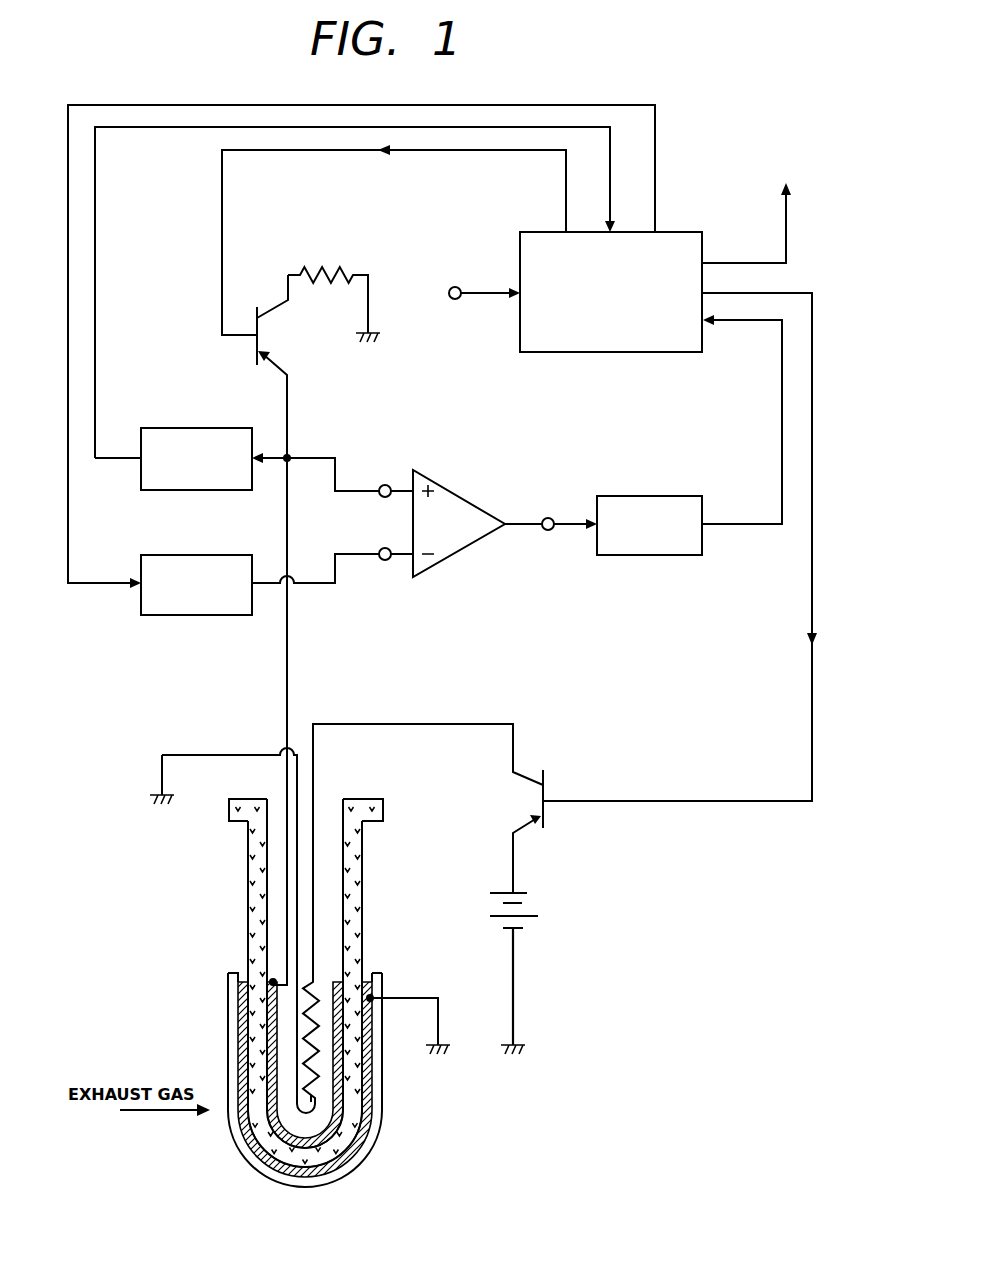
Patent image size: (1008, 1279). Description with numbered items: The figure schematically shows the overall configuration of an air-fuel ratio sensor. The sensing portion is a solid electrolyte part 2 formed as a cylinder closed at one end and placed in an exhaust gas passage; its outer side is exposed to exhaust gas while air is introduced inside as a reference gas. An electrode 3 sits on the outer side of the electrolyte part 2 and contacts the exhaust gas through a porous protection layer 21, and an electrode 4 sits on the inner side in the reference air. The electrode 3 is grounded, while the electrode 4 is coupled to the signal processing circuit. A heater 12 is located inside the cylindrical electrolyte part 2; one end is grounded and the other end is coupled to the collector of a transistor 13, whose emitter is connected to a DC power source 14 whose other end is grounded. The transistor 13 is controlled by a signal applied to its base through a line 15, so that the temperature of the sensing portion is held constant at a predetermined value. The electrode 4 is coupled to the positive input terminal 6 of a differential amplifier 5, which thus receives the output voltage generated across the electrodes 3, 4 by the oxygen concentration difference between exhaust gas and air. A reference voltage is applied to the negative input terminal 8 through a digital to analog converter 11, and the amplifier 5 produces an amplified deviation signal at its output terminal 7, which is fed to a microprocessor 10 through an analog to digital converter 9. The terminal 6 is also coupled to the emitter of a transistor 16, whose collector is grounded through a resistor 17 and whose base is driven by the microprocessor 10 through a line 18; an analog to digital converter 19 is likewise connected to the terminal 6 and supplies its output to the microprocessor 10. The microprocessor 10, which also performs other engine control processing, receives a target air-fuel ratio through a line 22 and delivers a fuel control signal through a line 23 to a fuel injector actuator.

The solid electrolyte part 2 is at (248, 930).
The electrode 3 is at (372, 1076).
The electrode 4 is at (268, 1042).
The differential amplifier 5 is at (460, 490).
The positive input terminal 6 is at (385, 485).
The output terminal 7 is at (548, 530).
The negative input terminal 8 is at (385, 560).
The analog to digital converter 9 is at (690, 496).
The microprocessor 10 is at (683, 232).
The digital to analog converter 11 is at (236, 555).
The heater 12 is at (313, 980).
The transistor 13 is at (545, 776).
The DC power source 14 is at (533, 893).
The line 15 is at (812, 690).
The transistor 16 is at (273, 329).
The resistor 17 is at (330, 266).
The line 18 is at (222, 197).
The analog to digital converter 19 is at (229, 428).
The porous protection layer 21 is at (375, 1145).
The line 22 is at (484, 299).
The line 23 is at (790, 243).